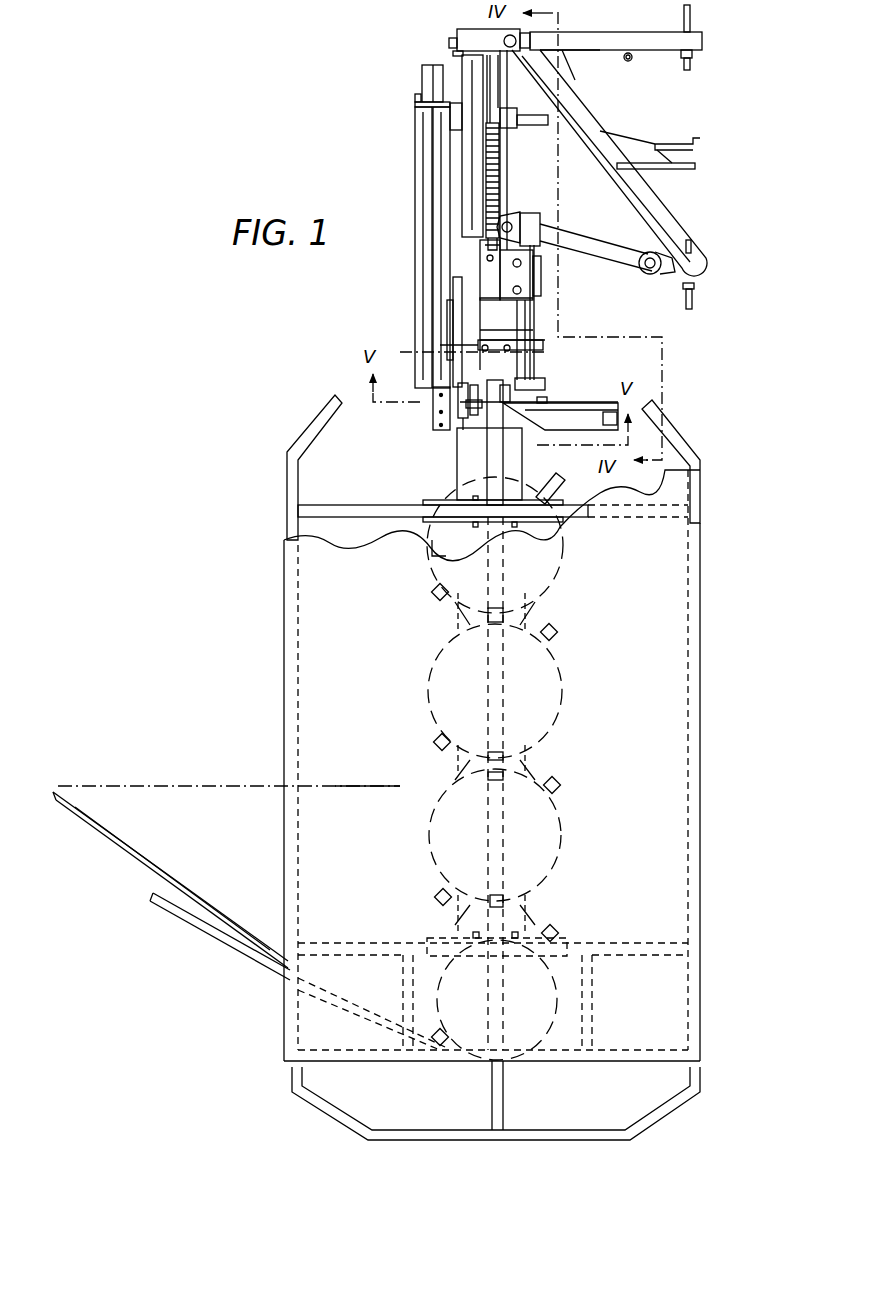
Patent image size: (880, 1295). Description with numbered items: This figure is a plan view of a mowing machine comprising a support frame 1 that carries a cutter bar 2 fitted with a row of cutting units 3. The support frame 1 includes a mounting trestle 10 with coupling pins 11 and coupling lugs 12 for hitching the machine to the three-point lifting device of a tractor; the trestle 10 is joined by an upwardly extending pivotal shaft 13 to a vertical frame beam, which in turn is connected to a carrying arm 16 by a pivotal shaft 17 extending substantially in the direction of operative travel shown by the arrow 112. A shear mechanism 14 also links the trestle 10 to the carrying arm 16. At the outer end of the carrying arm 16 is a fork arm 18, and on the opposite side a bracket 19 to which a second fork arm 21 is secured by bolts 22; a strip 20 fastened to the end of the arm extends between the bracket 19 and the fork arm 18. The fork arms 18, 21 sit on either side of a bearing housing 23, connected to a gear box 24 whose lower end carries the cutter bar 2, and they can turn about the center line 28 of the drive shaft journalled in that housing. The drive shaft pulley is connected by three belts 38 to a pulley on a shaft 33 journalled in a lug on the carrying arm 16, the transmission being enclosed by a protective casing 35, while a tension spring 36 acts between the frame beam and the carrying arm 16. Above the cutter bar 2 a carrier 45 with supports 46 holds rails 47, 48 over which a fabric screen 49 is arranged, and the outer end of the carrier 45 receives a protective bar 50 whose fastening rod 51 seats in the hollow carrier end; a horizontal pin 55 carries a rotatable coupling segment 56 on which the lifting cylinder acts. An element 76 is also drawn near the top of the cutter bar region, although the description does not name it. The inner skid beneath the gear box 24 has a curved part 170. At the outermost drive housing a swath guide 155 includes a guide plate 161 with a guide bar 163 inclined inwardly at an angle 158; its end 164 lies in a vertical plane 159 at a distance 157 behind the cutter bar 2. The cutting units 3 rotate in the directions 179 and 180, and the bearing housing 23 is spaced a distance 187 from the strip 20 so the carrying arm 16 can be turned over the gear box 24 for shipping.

The support frame 1 is at (668, 204).
The cutter bar 2 is at (460, 463).
The cutting units 3 is at (527, 652).
The mounting trestle 10 is at (608, 35).
The coupling pins 11 is at (691, 14).
The coupling lugs 12 is at (700, 140).
The pivotal shaft 13 is at (511, 52).
The shear mechanism 14 is at (593, 246).
The carrying arm 16 is at (492, 270).
The pivotal shaft 17 is at (450, 42).
The fork arm 18 is at (455, 317).
The bracket 19 is at (514, 276).
The strip 20 is at (517, 318).
The fork arm 21 is at (530, 343).
The bolts 22 is at (550, 222).
The bearing housing 23 is at (503, 335).
The gear box 24 is at (527, 392).
The center line 28 is at (411, 347).
The shaft 33 is at (546, 124).
The protective casing 35 is at (422, 132).
The tension spring 36 is at (499, 180).
The belts 38 is at (433, 66).
The carrier 45 is at (492, 442).
The supports 46 is at (435, 552).
The rail 47 is at (285, 487).
The rail 48 is at (701, 442).
The fabric screen 49 is at (652, 763).
The protective bar 50 is at (582, 1132).
The fastening rod 51 is at (497, 1080).
The horizontal pin 55 is at (458, 418).
The coupling segment 56 is at (462, 425).
The inlet pipe 76 is at (551, 480).
The direction of operative travel 112 is at (757, 108).
The swath guide 155 is at (262, 968).
The distance 157 is at (450, 618).
The angle 158 is at (187, 840).
The vertical plane 159 is at (357, 787).
The guide plate 161 is at (209, 934).
The guide bar 163 is at (121, 845).
The end 164 is at (58, 788).
The curved part 170 is at (567, 395).
The direction of rotation 179 is at (571, 573).
The direction of rotation 180 is at (572, 660).
The distance 187 is at (540, 303).